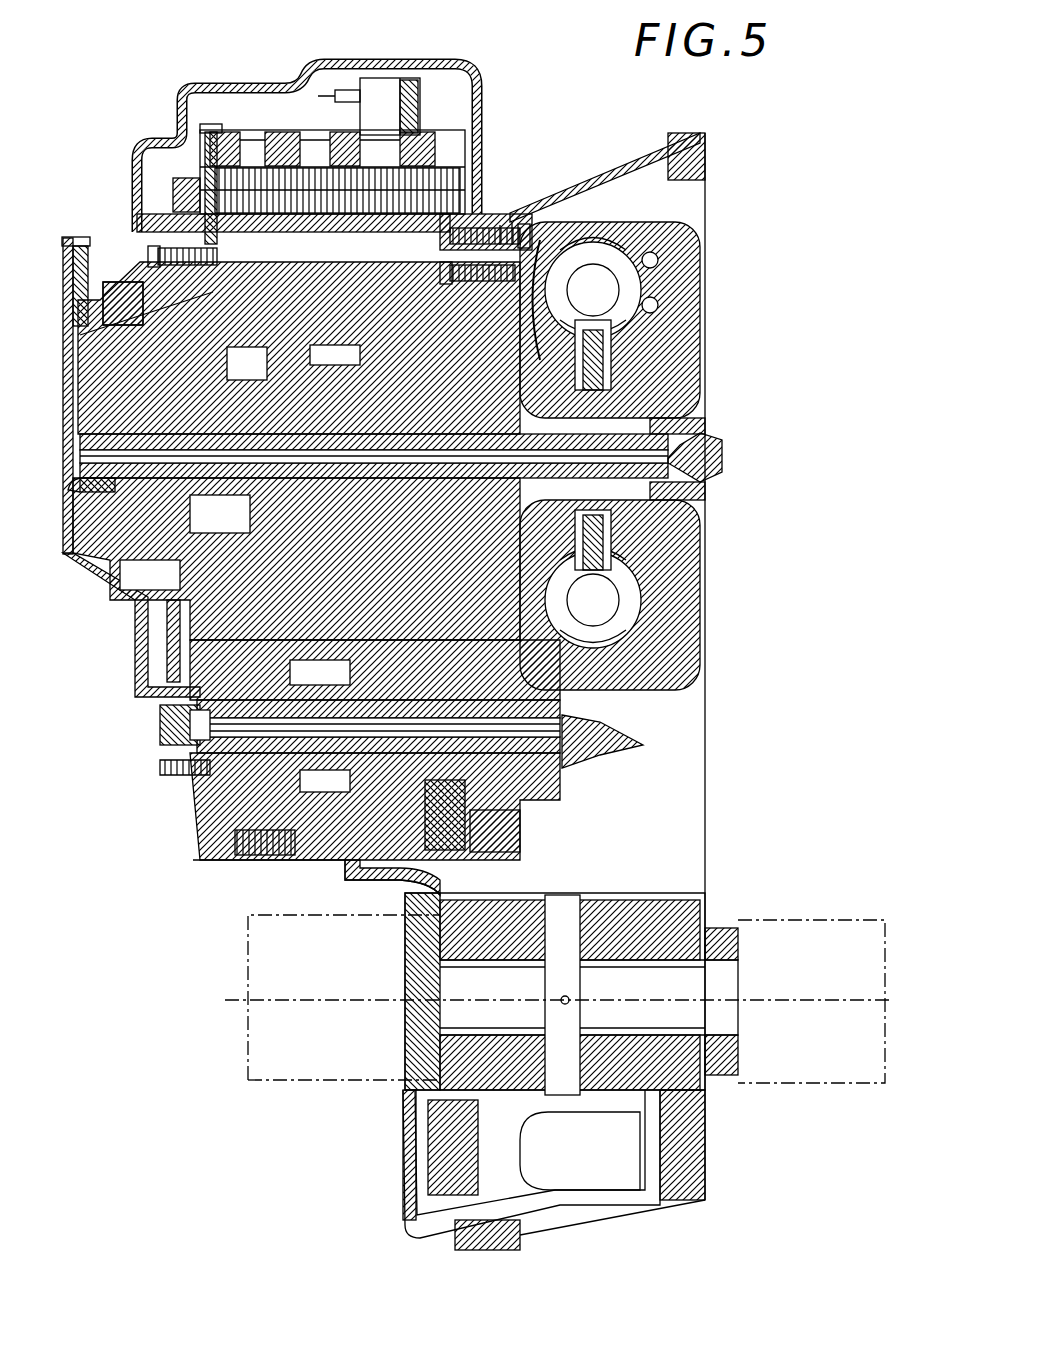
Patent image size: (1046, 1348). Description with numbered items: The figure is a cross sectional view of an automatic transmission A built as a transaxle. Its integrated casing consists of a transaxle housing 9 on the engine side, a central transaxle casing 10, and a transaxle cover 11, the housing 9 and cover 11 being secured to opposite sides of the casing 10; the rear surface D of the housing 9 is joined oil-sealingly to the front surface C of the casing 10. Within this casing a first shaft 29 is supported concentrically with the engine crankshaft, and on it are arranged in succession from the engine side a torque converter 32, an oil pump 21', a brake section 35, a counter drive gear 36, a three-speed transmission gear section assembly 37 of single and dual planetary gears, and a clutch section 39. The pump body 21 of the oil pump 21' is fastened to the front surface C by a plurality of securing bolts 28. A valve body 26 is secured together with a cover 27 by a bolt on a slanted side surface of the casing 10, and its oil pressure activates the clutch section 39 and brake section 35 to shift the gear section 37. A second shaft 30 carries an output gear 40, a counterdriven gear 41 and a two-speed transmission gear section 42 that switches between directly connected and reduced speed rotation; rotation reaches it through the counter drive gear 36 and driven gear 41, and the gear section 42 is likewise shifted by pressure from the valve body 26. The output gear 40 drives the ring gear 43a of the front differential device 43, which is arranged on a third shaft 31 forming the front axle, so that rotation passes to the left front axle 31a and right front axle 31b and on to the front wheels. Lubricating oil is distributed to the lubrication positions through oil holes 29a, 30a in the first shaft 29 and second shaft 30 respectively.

The transaxle cover 11 is at (388, 63).
The cover 27 is at (200, 88).
The valve body 26 is at (252, 118).
The counter drive gear 36 is at (352, 165).
The three-speed transmission gear section assembly 37 is at (200, 270).
The clutch section 39 is at (158, 300).
The brake section 35 is at (488, 226).
The securing bolts 28 is at (528, 235).
The pump body 21 is at (610, 443).
The oil pump 21' is at (570, 255).
The transaxle housing 9 is at (612, 205).
The torque converter 32 is at (620, 213).
The first shaft 29 is at (680, 440).
The oil hole 29a is at (82, 484).
The second shaft 30 is at (465, 790).
The oil hole 30a is at (188, 730).
The output gear 40 is at (505, 822).
The transaxle casing 10 is at (205, 845).
The two-speed transmission gear section 42 is at (252, 855).
The counterdriven gear 41 is at (356, 882).
The front differential device 43 is at (612, 905).
The ring gear 43a is at (440, 1174).
The third shaft 31 is at (230, 1003).
The left front axle 31a is at (372, 1055).
The right front axle 31b is at (772, 1065).
The rear surface of the transaxle housing D is at (500, 228).
The front surface of the transaxle casing C is at (512, 230).
The automatic transmission A is at (530, 90).